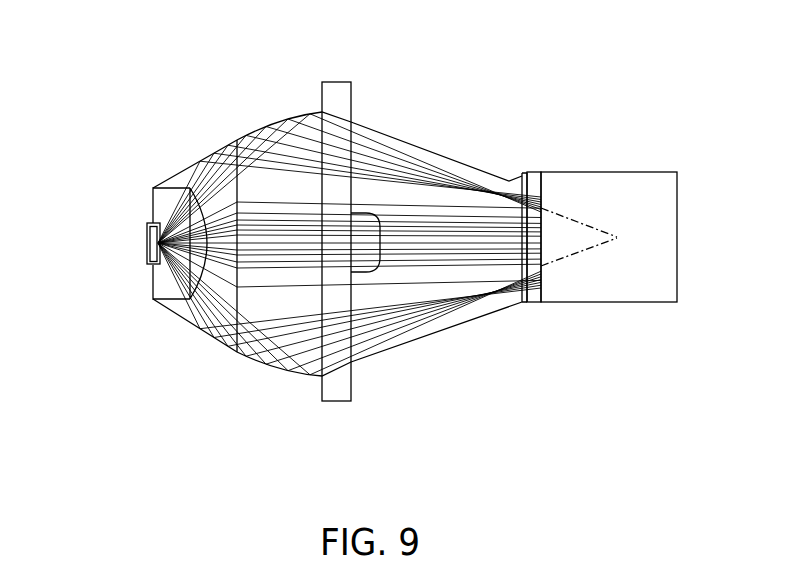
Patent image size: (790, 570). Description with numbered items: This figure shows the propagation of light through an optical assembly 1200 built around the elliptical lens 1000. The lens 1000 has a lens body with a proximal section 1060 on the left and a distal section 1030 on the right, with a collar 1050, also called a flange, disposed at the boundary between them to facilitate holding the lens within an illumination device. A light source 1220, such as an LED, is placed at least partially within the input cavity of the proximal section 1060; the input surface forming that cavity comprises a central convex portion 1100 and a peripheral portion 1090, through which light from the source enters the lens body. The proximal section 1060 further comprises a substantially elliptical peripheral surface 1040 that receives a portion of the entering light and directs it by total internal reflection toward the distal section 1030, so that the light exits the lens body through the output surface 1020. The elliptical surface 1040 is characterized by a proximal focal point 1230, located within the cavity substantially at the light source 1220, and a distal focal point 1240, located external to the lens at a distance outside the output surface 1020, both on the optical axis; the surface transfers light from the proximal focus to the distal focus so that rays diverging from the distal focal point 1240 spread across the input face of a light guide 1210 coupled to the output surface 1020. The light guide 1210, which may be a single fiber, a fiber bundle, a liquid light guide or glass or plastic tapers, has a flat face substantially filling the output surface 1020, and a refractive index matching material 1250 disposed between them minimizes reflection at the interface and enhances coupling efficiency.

The lens 1000 is at (367, 372).
The output surface 1020 is at (512, 181).
The distal section 1030 is at (455, 330).
The elliptical peripheral surface 1040 is at (268, 130).
The collar 1050 is at (337, 82).
The proximal section 1060 is at (222, 140).
The peripheral portion 1090 is at (176, 302).
The central convex portion 1100 is at (182, 306).
The optical assembly 1200 is at (187, 442).
The light guide 1210 is at (643, 188).
The light source 1220 is at (145, 237).
The proximal focal point 1230 is at (150, 252).
The distal focal point 1240 is at (622, 240).
The refractive index matching material 1250 is at (533, 172).